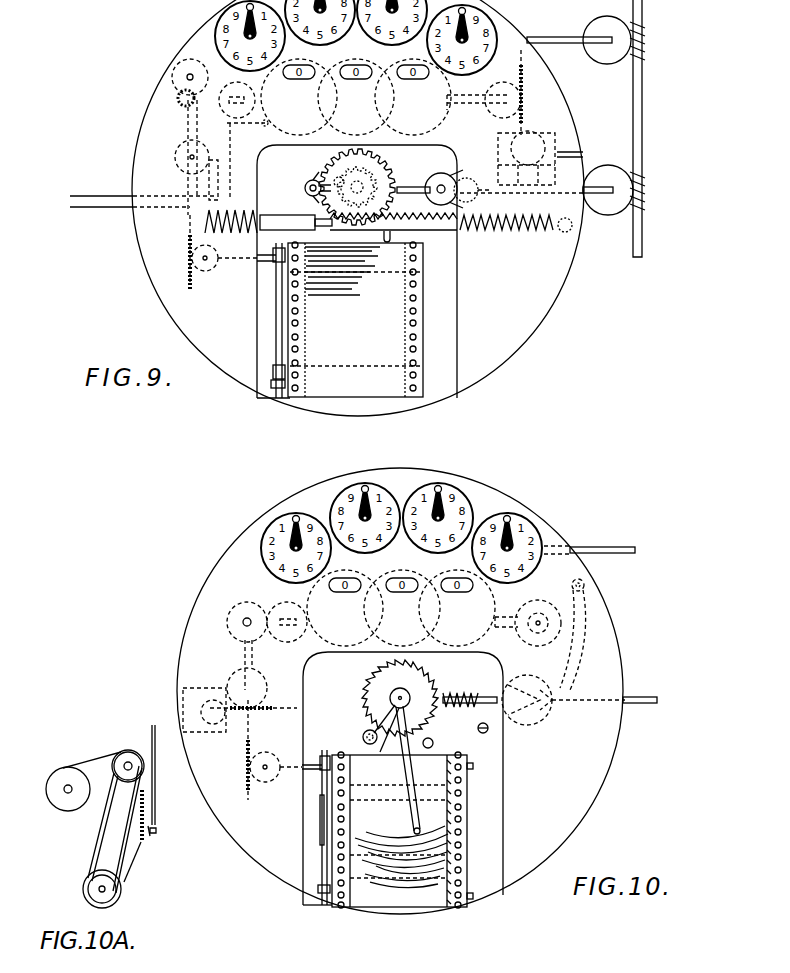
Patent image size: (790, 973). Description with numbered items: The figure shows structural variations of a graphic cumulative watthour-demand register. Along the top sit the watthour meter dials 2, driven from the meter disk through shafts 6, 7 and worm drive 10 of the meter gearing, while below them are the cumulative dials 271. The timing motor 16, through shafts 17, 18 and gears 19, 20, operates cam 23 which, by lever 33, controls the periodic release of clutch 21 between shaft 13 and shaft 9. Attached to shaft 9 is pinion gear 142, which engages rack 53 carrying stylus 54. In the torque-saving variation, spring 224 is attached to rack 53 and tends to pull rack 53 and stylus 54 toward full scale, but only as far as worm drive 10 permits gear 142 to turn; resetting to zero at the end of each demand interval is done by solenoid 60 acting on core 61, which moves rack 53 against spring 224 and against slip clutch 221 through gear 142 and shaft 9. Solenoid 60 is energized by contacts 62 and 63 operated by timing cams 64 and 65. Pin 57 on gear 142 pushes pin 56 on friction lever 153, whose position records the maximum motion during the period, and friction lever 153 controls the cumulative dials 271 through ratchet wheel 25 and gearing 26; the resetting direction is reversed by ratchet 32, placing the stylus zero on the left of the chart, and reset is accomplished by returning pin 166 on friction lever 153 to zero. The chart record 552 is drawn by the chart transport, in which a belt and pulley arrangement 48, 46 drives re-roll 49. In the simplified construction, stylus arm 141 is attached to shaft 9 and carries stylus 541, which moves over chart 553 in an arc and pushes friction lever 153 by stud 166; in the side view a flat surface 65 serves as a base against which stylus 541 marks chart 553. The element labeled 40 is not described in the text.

In FIG. 10, the watthour meter dials 2 is at (418, 496).
In FIG. 9, the cumulative dials 271 is at (356, 65).
In FIG. 10, the cumulative dials 271 is at (408, 577).
In FIG. 9, the gear 20 is at (176, 92).
In FIG. 10, the gear 20 is at (263, 606).
In FIG. 9, the timing cam 65 is at (234, 91).
In FIG. 10, the timing cam 65 is at (470, 832).
In FIG. 10A, the timing cam 65 is at (145, 850).
In FIG. 9, the shaft 18 is at (214, 105).
In FIG. 10, the shaft 18 is at (244, 656).
In FIG. 9, the contact 63 is at (236, 126).
In FIG. 9, the timing cam 64 is at (174, 156).
In FIG. 9, the contact 62 is at (216, 172).
In FIG. 9, the solenoid 60 is at (236, 210).
In FIG. 9, the core 61 is at (268, 214).
In FIG. 9, the shaft 40 is at (592, 146).
In FIG. 9, the ratchet 32 is at (316, 176).
In FIG. 10, the ratchet 32 is at (386, 738).
In FIG. 9, the pin 166 is at (310, 183).
In FIG. 10, the pin 166 is at (363, 736).
In FIG. 9, the friction lever 153 is at (318, 199).
In FIG. 10, the friction lever 153 is at (372, 722).
In FIG. 9, the pin 57 is at (357, 184).
In FIG. 9, the pin 56 is at (348, 193).
In FIG. 9, the gearing 26 is at (372, 150).
In FIG. 10, the gearing 26 is at (392, 658).
In FIG. 9, the ratchet wheel 25 is at (392, 166).
In FIG. 10, the ratchet wheel 25 is at (432, 682).
In FIG. 9, the shaft 9 is at (422, 185).
In FIG. 10, the shaft 9 is at (483, 696).
In FIG. 9, the pinion gear 142 is at (430, 182).
In FIG. 9, the rack 53 is at (410, 210).
In FIG. 9, the stylus 54 is at (391, 238).
In FIG. 9, the belt and pulley arrangement 48 is at (271, 320).
In FIG. 10, the belt and pulley arrangement 48 is at (320, 762).
In FIG. 10A, the belt and pulley arrangement 48 is at (128, 750).
In FIG. 9, the belt and pulley arrangement 46 is at (276, 318).
In FIG. 10, the belt and pulley arrangement 46 is at (321, 812).
In FIG. 10A, the belt and pulley arrangement 46 is at (100, 825).
In FIG. 9, the re-roll 49 is at (271, 371).
In FIG. 10, the re-roll 49 is at (320, 891).
In FIG. 10A, the re-roll 49 is at (113, 897).
In FIG. 9, the record sheet 552 is at (424, 301).
In FIG. 9, the shaft 17 is at (525, 92).
In FIG. 10, the shaft 17 is at (254, 698).
In FIG. 9, the gear 19 is at (528, 95).
In FIG. 10, the gear 19 is at (262, 690).
In FIG. 9, the timing motor 16 is at (540, 138).
In FIG. 10, the timing motor 16 is at (192, 688).
In FIG. 9, the slip clutch 221 is at (464, 178).
In FIG. 10, the slip clutch 221 is at (466, 708).
In FIG. 9, the spring 224 is at (506, 232).
In FIG. 9, the shaft 13 is at (598, 196).
In FIG. 10, the shaft 13 is at (640, 697).
In FIG. 9, the shaft 7 is at (558, 37).
In FIG. 10, the shaft 7 is at (592, 547).
In FIG. 9, the shaft 6 is at (643, 118).
In FIG. 9, the worm drive 10 is at (648, 194).
In FIG. 10, the stylus arm 141 is at (411, 770).
In FIG. 10A, the stylus arm 141 is at (155, 790).
In FIG. 10, the stylus 541 is at (414, 829).
In FIG. 10A, the stylus 541 is at (147, 834).
In FIG. 10, the chart 553 is at (469, 861).
In FIG. 10A, the chart 553 is at (131, 870).
In FIG. 10, the cam 23 is at (528, 615).
In FIG. 10, the lever 33 is at (578, 655).
In FIG. 10, the clutch 21 is at (538, 726).